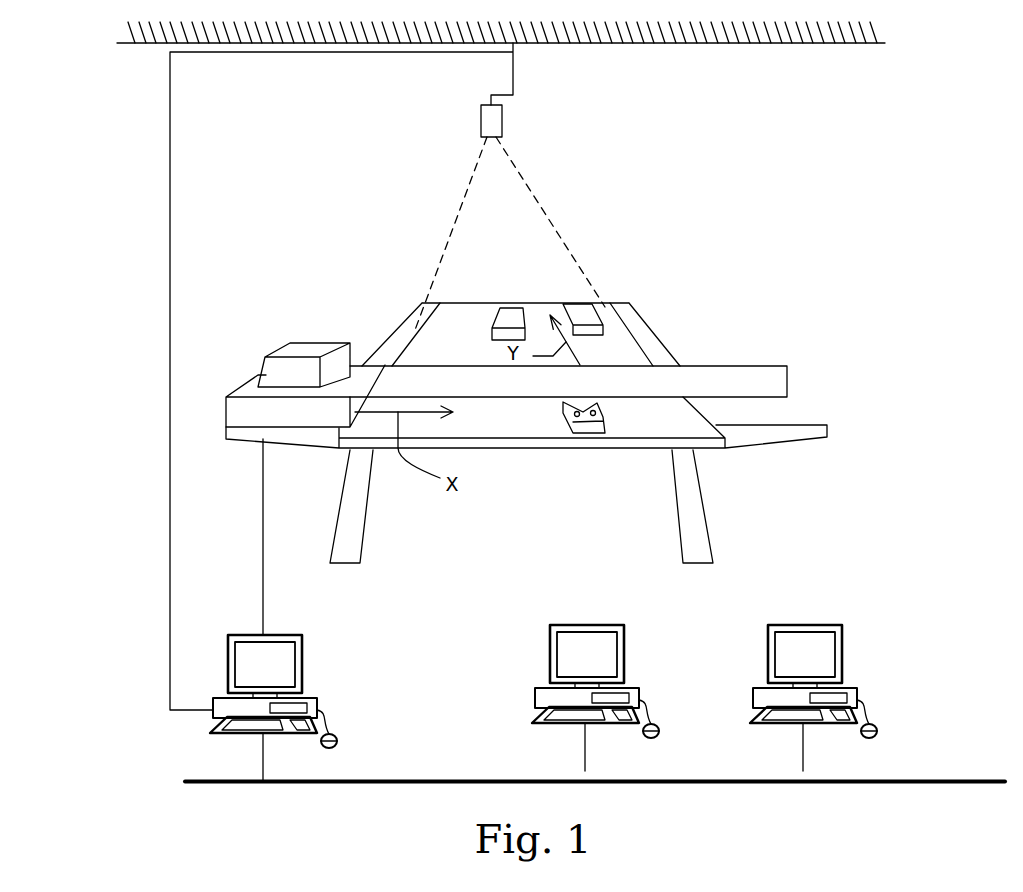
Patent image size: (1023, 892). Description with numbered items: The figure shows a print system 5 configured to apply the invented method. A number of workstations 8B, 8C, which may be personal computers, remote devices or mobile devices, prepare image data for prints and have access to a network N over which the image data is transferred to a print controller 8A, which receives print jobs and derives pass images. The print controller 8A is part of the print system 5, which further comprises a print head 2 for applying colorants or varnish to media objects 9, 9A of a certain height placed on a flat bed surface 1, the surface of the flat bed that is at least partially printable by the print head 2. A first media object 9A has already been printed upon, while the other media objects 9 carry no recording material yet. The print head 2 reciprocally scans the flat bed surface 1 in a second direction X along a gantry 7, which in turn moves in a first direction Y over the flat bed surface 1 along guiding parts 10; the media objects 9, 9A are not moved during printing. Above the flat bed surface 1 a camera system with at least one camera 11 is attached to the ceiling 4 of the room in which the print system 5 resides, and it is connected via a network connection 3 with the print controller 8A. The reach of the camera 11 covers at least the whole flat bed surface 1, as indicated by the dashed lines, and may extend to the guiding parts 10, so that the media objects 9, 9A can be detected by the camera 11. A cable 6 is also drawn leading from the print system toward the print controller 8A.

The flat bed surface 1 is at (456, 343).
The print head 2 is at (277, 348).
The network connection 3 is at (168, 528).
The ceiling 4 is at (783, 43).
The print system 5 is at (867, 448).
The cable 6 is at (266, 576).
The gantry 7 is at (737, 375).
The print controller 8A is at (317, 703).
The workstation 8B is at (639, 693).
The workstation 8C is at (857, 693).
The media object 9 is at (515, 318).
The first media object 9A is at (600, 433).
The guiding parts 10 is at (381, 350).
The camera 11 is at (487, 118).
The network N is at (982, 780).